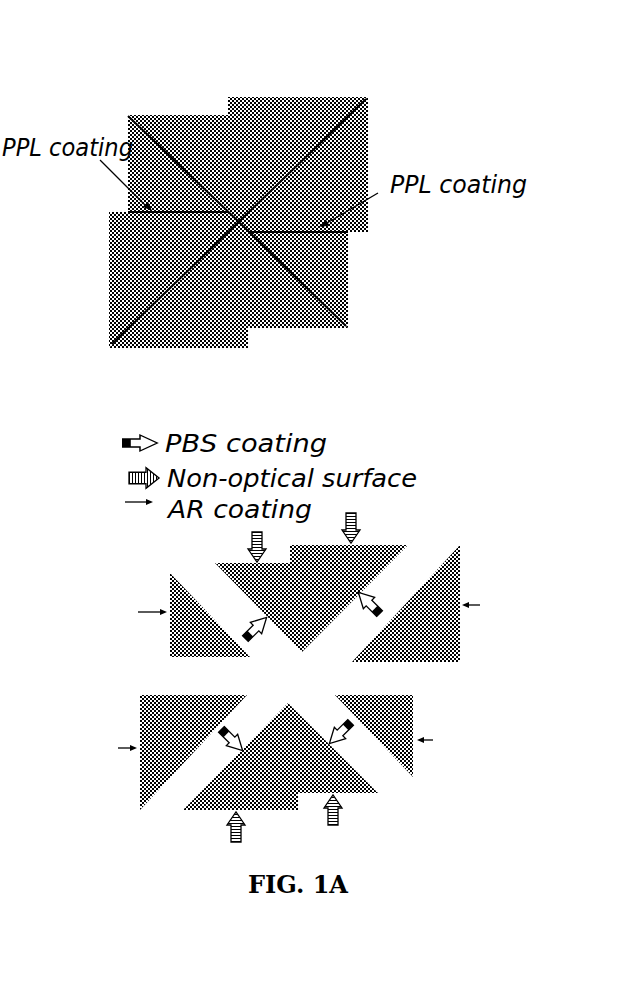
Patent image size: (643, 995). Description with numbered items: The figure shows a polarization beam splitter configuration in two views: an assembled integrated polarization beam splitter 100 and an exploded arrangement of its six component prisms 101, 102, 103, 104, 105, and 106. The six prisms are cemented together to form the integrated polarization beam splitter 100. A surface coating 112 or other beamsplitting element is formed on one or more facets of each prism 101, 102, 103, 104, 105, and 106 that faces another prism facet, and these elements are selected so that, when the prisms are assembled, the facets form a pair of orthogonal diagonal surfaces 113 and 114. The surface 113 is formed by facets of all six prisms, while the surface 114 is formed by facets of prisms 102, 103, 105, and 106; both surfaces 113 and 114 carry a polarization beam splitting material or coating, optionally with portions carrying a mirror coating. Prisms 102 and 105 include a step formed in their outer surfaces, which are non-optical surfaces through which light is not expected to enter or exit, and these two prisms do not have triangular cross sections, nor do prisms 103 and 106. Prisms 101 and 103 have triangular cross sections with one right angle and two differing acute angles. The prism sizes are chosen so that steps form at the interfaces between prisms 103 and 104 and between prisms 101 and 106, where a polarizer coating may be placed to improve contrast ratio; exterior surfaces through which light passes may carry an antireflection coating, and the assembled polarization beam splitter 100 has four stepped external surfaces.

The integrated polarization beam splitter 100 is at (494, 104).
The prism 101 is at (153, 167).
The prism 102 is at (273, 123).
The prism 103 is at (347, 145).
The prism 104 is at (333, 292).
The prism 105 is at (213, 310).
The prism 106 is at (132, 263).
The surface coating 112 is at (298, 225).
The orthogonal surface 113 is at (163, 143).
The orthogonal surface 114 is at (207, 253).